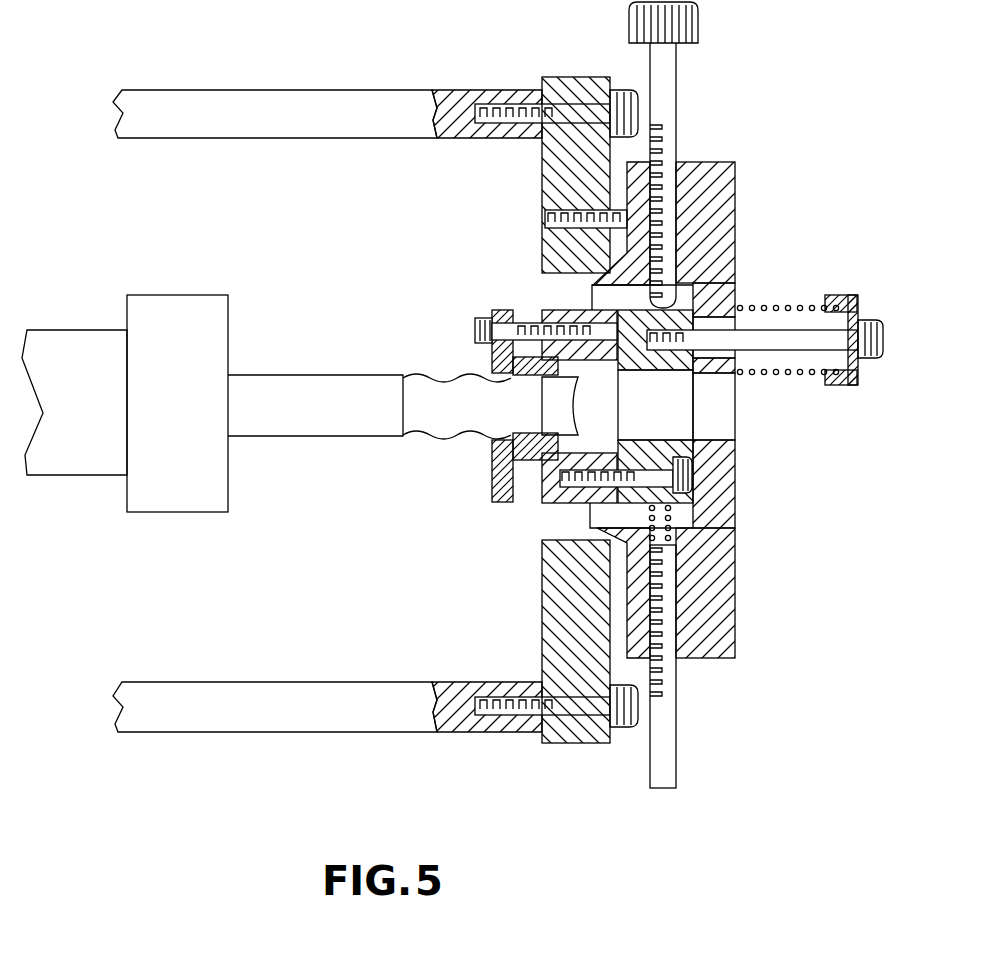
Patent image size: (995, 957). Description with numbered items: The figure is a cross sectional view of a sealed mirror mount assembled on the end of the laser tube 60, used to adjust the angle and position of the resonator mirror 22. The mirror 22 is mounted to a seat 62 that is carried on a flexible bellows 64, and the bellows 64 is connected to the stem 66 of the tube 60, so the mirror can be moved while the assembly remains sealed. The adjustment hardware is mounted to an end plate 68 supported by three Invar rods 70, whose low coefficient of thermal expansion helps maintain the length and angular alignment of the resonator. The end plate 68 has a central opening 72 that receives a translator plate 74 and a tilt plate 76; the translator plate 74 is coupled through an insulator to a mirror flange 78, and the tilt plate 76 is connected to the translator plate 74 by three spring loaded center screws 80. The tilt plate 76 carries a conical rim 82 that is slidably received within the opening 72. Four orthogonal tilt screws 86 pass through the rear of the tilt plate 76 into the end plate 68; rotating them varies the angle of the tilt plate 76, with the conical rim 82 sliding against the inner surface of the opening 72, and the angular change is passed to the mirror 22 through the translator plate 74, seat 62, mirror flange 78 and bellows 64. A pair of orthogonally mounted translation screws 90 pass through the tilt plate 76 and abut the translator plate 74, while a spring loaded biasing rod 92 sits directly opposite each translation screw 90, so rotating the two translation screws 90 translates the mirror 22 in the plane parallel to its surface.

The mirror 22 is at (553, 408).
The laser tube 60 is at (85, 348).
The seat 62 is at (513, 388).
The flexible bellows 64 is at (438, 408).
The stem 66 is at (280, 383).
The end plate 68 is at (568, 738).
The Invar rods 70 is at (243, 108).
The central opening 72 is at (538, 277).
The translator plate 74 is at (678, 448).
The tilt plate 76 is at (717, 172).
The mirror flange 78 is at (500, 503).
The spring loaded center screws 80 is at (870, 327).
The conical rim 82 is at (593, 283).
The tilt screws 86 is at (547, 218).
The translation screws 90 is at (629, 33).
The spring loaded biasing rod 92 is at (663, 735).